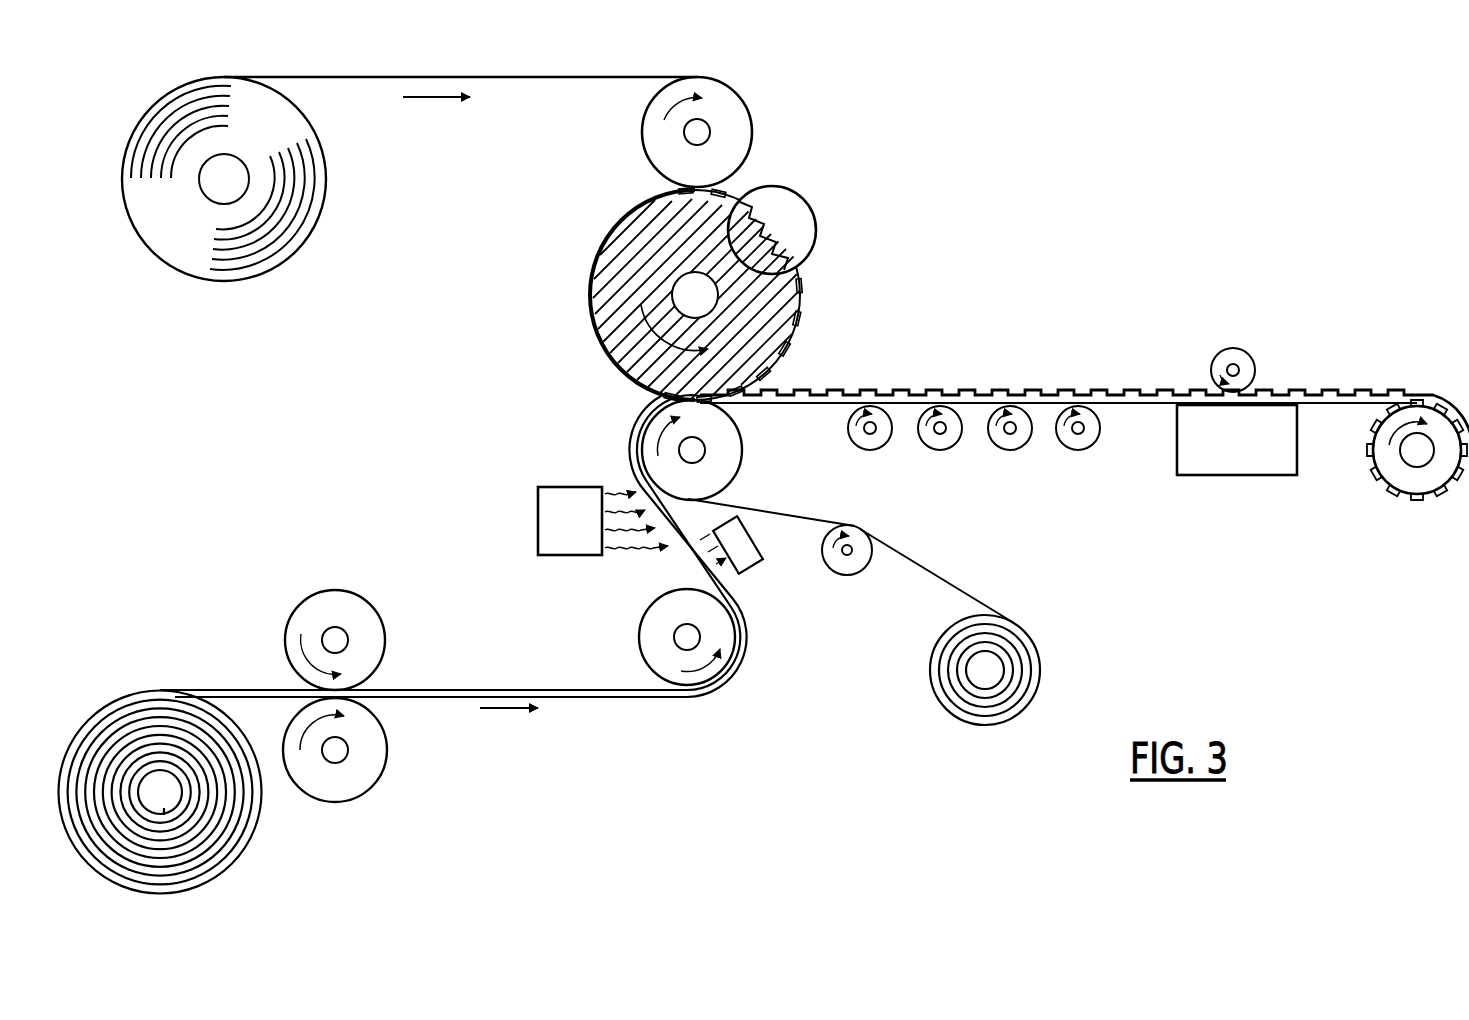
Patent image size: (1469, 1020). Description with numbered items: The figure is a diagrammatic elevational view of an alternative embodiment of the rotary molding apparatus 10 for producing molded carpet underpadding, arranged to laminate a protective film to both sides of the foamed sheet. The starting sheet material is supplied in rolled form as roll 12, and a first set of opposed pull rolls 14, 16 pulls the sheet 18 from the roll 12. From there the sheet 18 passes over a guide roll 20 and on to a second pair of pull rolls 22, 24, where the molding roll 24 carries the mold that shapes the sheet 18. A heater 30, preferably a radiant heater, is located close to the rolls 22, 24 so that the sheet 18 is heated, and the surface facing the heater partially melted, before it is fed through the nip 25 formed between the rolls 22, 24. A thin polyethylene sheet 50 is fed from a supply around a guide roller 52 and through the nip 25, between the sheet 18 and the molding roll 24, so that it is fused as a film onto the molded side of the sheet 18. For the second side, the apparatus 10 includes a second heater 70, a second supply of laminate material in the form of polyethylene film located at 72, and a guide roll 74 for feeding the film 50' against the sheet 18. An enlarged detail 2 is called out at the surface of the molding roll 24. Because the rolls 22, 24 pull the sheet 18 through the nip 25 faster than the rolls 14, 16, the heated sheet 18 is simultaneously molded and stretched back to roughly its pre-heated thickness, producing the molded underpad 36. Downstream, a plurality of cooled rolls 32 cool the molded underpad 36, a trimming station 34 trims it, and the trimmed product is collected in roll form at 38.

The enlarged detail of drum surface 2 is at (814, 222).
The apparatus 10 is at (962, 195).
The roll 12 is at (108, 698).
The pull roll 14 is at (375, 623).
The pull roll 16 is at (373, 755).
The sheet 18 is at (215, 683).
The guide roll 20 is at (647, 620).
The pull roll 22 is at (727, 475).
The molding roll 24 is at (797, 318).
The nip 25 is at (608, 401).
The heater 30 is at (538, 505).
The cooled rolls 32 is at (1085, 446).
The trimming station 34 is at (1182, 460).
The molded underpad 36 is at (1043, 390).
The roll 38 is at (1430, 392).
The polyethylene sheet 50 is at (460, 55).
The film 50' is at (856, 561).
The guide roller 52 is at (735, 120).
The second heater 70 is at (753, 563).
The second supply of laminate material 72 is at (933, 672).
The guide roll 74 is at (852, 568).